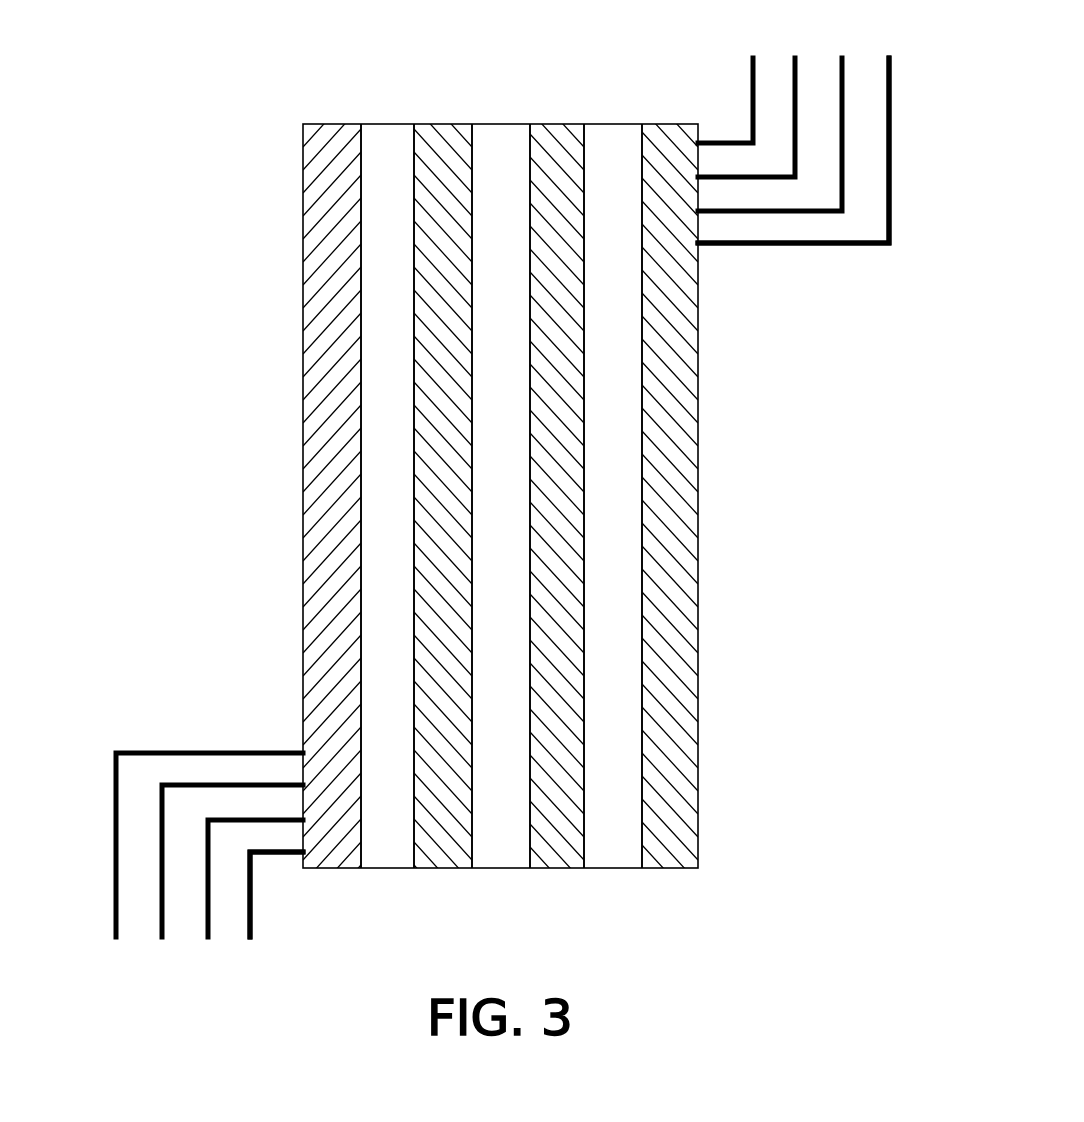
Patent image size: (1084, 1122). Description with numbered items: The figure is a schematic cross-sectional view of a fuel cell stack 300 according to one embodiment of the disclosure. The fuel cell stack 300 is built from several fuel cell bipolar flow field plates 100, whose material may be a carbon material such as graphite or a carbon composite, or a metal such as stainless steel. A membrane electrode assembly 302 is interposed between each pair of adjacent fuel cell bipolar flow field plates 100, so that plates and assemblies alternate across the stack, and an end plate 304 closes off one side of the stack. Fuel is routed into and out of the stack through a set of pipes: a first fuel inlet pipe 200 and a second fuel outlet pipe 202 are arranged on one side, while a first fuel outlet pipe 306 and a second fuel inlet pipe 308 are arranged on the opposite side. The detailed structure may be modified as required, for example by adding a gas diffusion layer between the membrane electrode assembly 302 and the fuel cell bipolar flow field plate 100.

The fuel cell stack 300 is at (220, 86).
The end plate 304 is at (331, 127).
The fuel cell bipolar flow field plate 100 is at (447, 127).
The membrane electrode assembly 302 is at (390, 869).
The first fuel inlet pipe 200 is at (798, 87).
The second fuel outlet pipe 202 is at (893, 150).
The first fuel outlet pipe 306 is at (112, 845).
The second fuel inlet pipe 308 is at (254, 911).